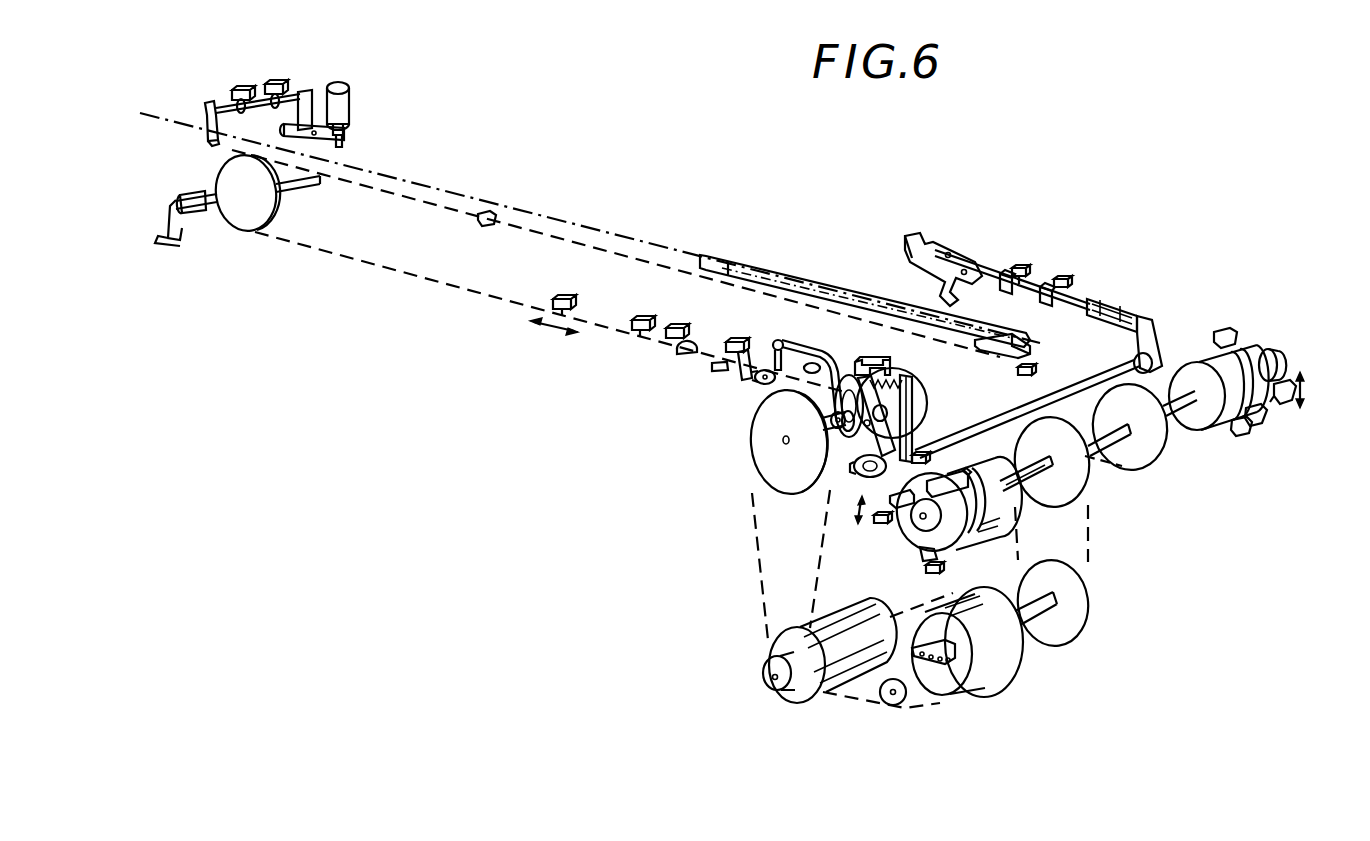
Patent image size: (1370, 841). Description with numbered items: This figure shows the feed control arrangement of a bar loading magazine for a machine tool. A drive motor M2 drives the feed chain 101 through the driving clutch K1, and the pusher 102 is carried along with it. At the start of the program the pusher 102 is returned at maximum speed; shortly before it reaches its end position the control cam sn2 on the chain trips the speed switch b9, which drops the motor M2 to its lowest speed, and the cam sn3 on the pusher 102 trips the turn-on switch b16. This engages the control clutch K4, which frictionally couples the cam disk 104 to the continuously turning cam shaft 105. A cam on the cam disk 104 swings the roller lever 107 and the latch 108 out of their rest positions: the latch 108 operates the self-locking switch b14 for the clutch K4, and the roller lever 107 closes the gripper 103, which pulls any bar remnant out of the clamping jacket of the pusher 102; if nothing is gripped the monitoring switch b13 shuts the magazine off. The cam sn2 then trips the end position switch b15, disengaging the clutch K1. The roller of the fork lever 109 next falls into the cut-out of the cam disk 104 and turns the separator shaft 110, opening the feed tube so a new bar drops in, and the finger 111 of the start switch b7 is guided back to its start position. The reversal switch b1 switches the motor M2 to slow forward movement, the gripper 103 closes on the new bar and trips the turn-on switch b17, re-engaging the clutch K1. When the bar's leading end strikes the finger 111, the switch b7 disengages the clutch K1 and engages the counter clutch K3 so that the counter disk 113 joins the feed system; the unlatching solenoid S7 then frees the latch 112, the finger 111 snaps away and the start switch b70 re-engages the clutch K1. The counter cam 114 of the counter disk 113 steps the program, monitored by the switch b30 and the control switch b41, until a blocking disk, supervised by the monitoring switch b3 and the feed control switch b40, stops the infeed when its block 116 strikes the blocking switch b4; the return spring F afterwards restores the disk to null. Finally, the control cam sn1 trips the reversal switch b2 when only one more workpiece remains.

The feed chain 101 is at (272, 244).
The pusher 102 is at (800, 245).
The gripper 103 is at (935, 258).
The cam disk 104 is at (830, 456).
The cam shaft 105 is at (762, 448).
The roller lever 107 is at (876, 470).
The latch 108 is at (908, 402).
The fork lever 109 is at (838, 336).
The separator shaft 110 is at (745, 368).
The finger 111 is at (206, 132).
The latch 112 is at (300, 133).
The counter disk 113 is at (952, 540).
The counter cam 114 is at (896, 522).
The block 116 is at (1264, 424).
The unlatching solenoid S7 is at (350, 100).
The control cam sn1 is at (478, 220).
The control cam sn2 is at (692, 340).
The cam sn3 is at (1000, 344).
The reversal switch b1 is at (766, 312).
The reversal switch b2 is at (596, 270).
The monitoring switch b3 is at (1242, 436).
The blocking switch b4 is at (1250, 318).
The start switch b7 is at (276, 80).
The speed switch b9 is at (712, 302).
The monitoring switch b13 is at (1022, 266).
The self-locking switch b14 is at (920, 450).
The end position switch b15 is at (676, 290).
The turn-on switch b16 is at (1037, 374).
The turn-on switch b17 is at (1068, 280).
The monitoring switch b30 is at (938, 572).
The feed control switch b40 is at (1284, 400).
The control switch b41 is at (870, 530).
The start switch b70 is at (251, 57).
The driving clutch K1 is at (986, 690).
The counter clutch K3 is at (990, 476).
The control clutch K4 is at (904, 380).
The drive motor M2 is at (824, 700).
The return spring F is at (1275, 362).